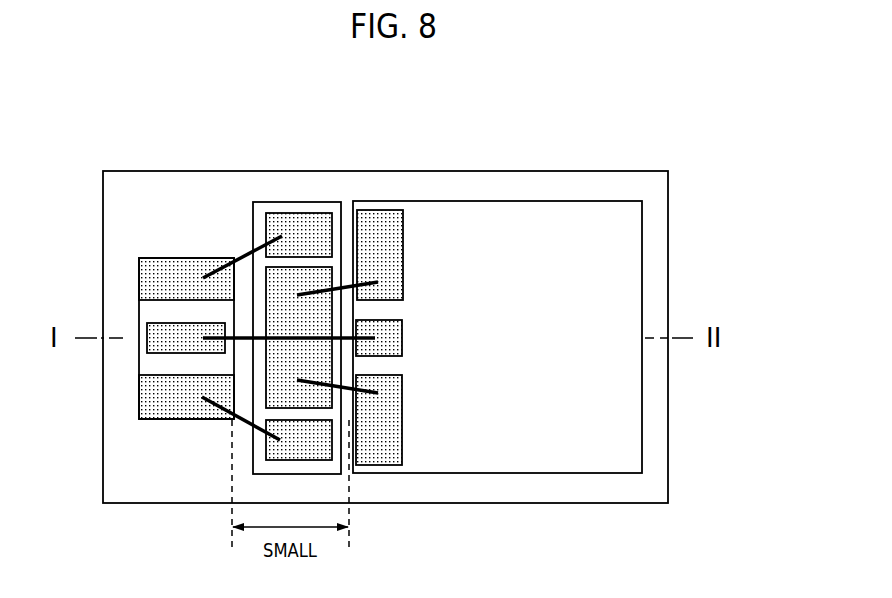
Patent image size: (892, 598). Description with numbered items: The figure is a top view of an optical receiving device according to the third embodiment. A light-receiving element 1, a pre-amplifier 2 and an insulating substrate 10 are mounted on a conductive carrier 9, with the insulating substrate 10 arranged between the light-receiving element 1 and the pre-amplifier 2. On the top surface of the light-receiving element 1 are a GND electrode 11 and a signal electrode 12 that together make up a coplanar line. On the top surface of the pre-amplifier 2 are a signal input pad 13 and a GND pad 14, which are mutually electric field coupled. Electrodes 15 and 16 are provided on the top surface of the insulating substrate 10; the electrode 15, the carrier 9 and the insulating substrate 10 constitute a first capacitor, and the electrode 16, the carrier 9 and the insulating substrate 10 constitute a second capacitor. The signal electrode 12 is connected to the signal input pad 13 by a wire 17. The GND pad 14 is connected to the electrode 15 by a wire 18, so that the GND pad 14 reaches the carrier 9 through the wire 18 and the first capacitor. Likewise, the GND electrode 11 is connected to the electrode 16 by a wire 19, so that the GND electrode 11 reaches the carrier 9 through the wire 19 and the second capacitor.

The light-receiving element 1 is at (138, 312).
The pre-amplifier 2 is at (615, 201).
The conductive carrier 9 is at (383, 171).
The insulating substrate 10 is at (313, 202).
The GND electrode 11 is at (155, 258).
The signal electrode 12 is at (183, 333).
The signal input pad 13 is at (402, 338).
The GND pad 14 is at (405, 253).
The electrode 15 is at (262, 361).
The electrode 16 is at (284, 213).
The wire 17 is at (370, 337).
The wire 18 is at (371, 283).
The wire 19 is at (240, 259).